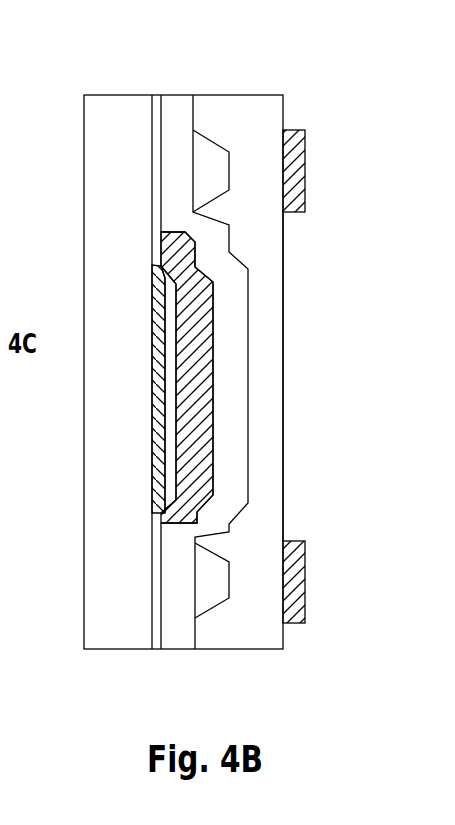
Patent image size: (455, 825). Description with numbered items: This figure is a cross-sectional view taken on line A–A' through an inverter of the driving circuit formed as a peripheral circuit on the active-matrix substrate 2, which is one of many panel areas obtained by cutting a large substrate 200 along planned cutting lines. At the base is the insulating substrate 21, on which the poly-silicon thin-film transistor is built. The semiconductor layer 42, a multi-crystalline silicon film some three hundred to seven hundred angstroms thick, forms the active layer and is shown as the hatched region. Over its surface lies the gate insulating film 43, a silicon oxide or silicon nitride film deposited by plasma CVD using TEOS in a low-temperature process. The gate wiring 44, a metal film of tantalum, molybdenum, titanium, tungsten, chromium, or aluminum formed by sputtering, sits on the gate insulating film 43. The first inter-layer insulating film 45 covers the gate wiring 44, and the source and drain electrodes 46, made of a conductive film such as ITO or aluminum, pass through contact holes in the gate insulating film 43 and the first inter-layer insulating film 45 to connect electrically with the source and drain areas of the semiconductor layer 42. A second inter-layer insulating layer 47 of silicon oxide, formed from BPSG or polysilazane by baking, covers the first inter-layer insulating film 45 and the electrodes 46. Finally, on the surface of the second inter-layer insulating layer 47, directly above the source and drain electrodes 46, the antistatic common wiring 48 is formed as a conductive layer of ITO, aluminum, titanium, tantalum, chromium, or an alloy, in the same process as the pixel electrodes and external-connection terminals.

The active-matrix substrate 2 is at (194, 393).
The large substrate 200 is at (118, 66).
The insulating substrate 21 is at (102, 650).
The semiconductor layer 42 is at (153, 313).
The gate insulating film 43 is at (155, 652).
The gate wiring 44 is at (214, 317).
The first inter-layer insulating film 45 is at (176, 652).
The source and drain electrodes 46 is at (214, 165).
The second inter-layer insulating layer 47 is at (265, 247).
The antistatic common wiring 48 is at (305, 170).